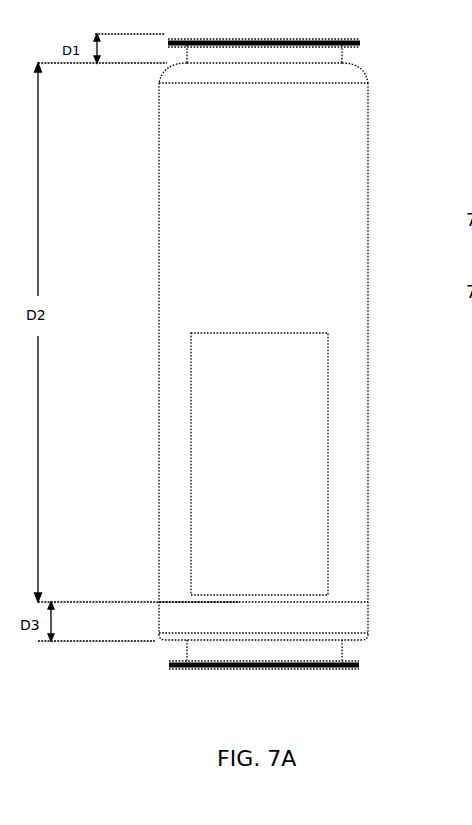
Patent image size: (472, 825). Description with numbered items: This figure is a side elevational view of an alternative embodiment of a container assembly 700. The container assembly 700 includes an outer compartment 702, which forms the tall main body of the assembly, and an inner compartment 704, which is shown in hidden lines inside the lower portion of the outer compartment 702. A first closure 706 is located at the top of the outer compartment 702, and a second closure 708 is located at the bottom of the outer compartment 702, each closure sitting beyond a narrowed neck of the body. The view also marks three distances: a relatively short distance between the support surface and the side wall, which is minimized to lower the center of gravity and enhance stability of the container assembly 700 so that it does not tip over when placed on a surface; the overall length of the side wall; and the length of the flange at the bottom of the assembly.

The container assembly 700 is at (105, 218).
The outer compartment 702 is at (352, 173).
The inner compartment 704 is at (190, 491).
The first closure 706 is at (341, 41).
The second closure 708 is at (339, 667).